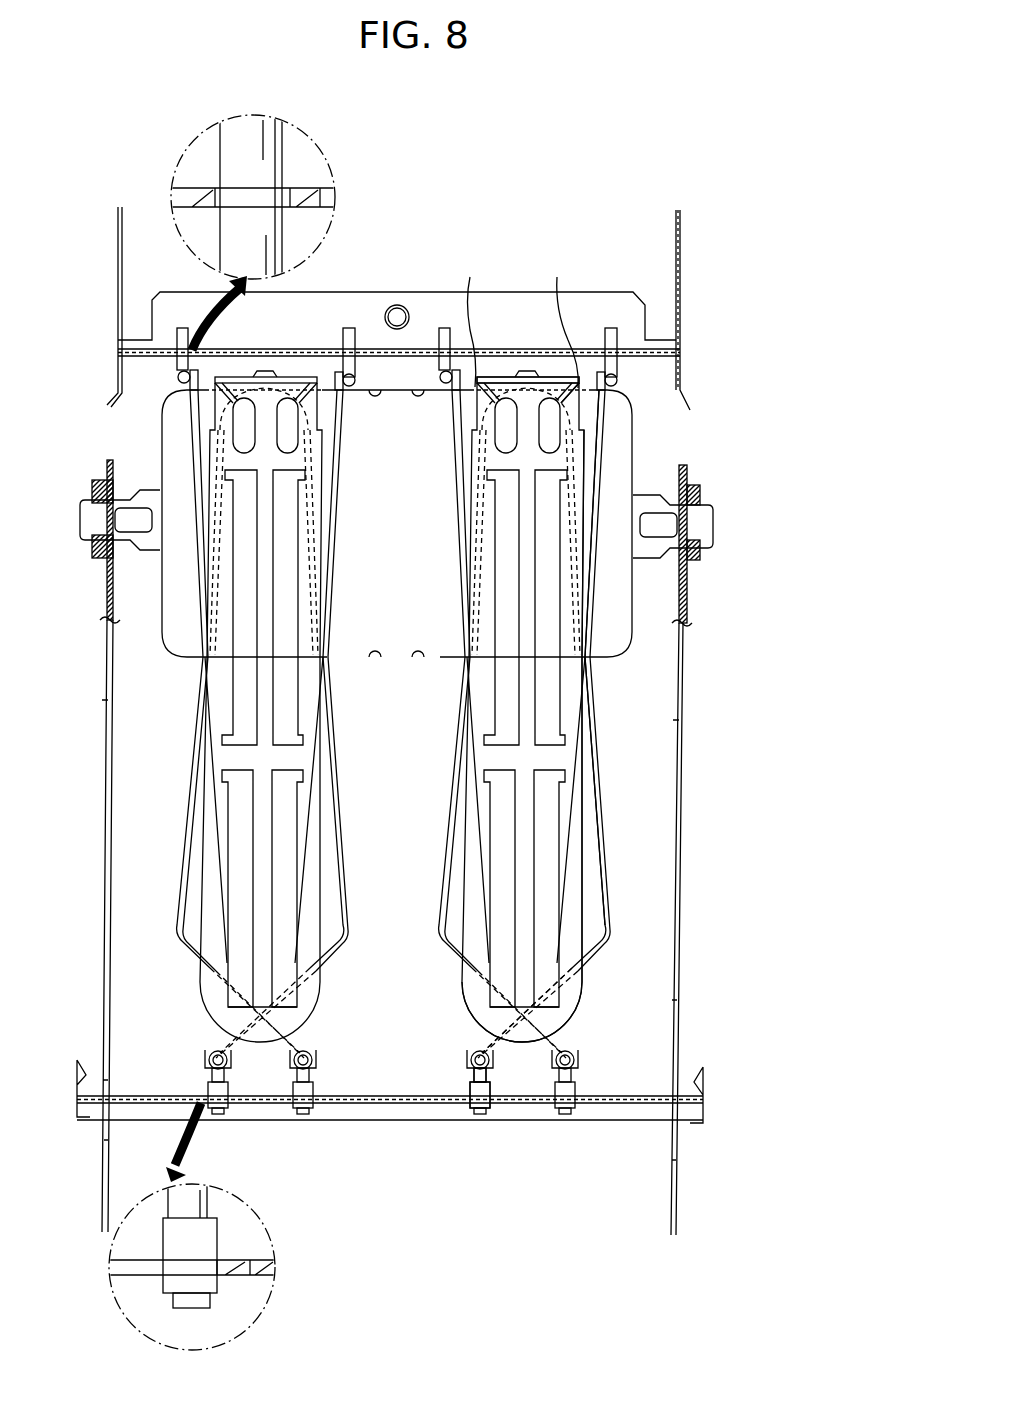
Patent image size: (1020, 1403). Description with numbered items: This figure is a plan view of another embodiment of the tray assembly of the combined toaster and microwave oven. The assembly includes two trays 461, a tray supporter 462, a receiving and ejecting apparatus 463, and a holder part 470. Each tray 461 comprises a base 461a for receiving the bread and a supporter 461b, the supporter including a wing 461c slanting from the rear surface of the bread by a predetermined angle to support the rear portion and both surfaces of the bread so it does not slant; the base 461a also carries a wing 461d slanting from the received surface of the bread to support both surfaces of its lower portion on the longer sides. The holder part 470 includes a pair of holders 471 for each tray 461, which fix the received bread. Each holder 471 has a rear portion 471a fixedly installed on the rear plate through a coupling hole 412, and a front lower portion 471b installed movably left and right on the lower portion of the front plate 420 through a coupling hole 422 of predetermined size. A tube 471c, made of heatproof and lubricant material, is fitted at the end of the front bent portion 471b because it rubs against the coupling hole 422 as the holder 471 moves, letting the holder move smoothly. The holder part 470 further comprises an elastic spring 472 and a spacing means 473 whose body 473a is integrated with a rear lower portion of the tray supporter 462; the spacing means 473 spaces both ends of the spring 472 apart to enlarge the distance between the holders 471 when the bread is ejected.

The coupling hole 412 is at (290, 210).
The front plate 420 is at (710, 1113).
The coupling hole 422 is at (430, 1100).
The tray 461 is at (460, 1000).
The base 461a is at (525, 1030).
The supporter 461b is at (575, 368).
The wing 461c is at (598, 412).
The wing 461d is at (593, 967).
The tray supporter 462 is at (642, 447).
The receiving and ejecting apparatus 463 is at (673, 1003).
The holder part 470 is at (756, 848).
The holder 471 is at (560, 908).
The rear portion 471a is at (227, 150).
The front lower portion 471b is at (487, 1080).
The tube 471c is at (478, 1108).
The elastic spring 472 is at (600, 845).
The spacing means 473 is at (475, 318).
The body 473a is at (568, 319).